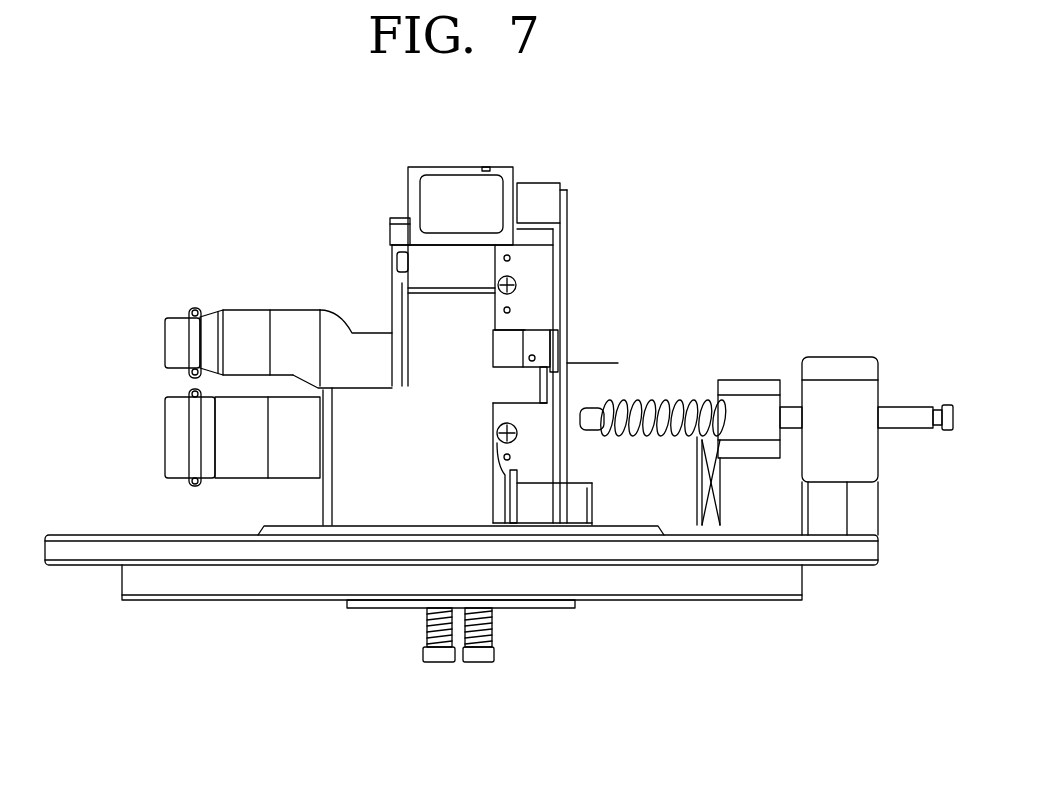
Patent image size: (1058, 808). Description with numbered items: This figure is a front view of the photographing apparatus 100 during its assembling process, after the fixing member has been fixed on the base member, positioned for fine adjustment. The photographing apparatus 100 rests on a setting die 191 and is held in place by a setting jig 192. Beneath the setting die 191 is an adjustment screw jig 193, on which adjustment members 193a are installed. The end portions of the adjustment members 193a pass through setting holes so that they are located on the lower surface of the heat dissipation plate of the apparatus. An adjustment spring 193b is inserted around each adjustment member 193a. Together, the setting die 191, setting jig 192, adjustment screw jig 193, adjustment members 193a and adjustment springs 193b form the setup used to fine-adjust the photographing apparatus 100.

The photographing apparatus 100 is at (600, 189).
The setting die 191 is at (840, 550).
The setting jig 192 is at (838, 367).
The adjustment screw jig 193 is at (548, 608).
The adjustment member 193a is at (440, 662).
The adjustment spring 193b is at (423, 630).